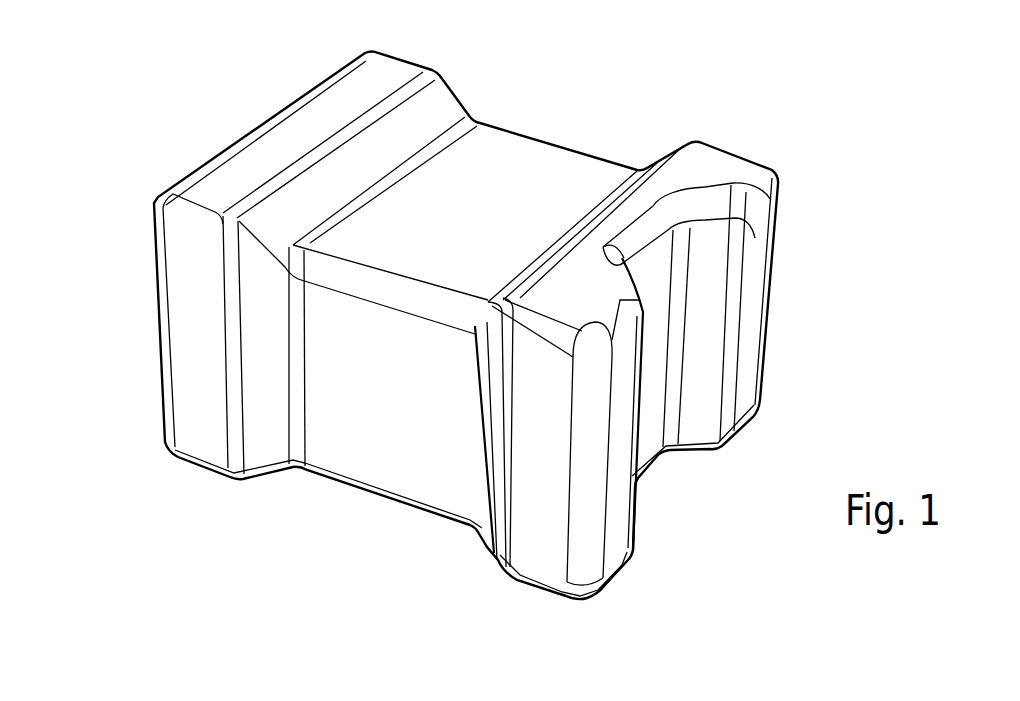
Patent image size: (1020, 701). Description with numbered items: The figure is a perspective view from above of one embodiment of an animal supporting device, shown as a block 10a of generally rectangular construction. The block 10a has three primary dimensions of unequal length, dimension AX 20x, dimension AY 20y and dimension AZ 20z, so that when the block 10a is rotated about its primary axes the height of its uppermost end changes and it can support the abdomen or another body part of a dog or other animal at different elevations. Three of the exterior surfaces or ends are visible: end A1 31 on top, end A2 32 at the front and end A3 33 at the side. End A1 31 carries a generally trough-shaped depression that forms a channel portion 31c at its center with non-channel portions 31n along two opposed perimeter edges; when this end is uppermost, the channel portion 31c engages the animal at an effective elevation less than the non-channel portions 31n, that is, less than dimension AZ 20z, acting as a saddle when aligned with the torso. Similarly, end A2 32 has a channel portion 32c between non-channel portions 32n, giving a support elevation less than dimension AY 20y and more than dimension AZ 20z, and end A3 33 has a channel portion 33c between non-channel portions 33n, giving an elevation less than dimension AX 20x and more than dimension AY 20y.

The supporting device or block 10a is at (466, 326).
The end A1 31 is at (607, 93).
The non-channel portions of end A1 31n is at (363, 83).
The channel portion of end A1 31c is at (523, 181).
The end A2 32 is at (127, 442).
The non-channel portions of end A2 32n is at (187, 250).
The channel portion of end A2 32c is at (358, 442).
The end A3 33 is at (827, 284).
The non-channel portions of end A3 33n is at (745, 383).
The channel portion of end A3 33c is at (657, 283).
The dimension AX 20x is at (547, 653).
The dimension AY 20y is at (827, 425).
The dimension AZ 20z is at (87, 185).